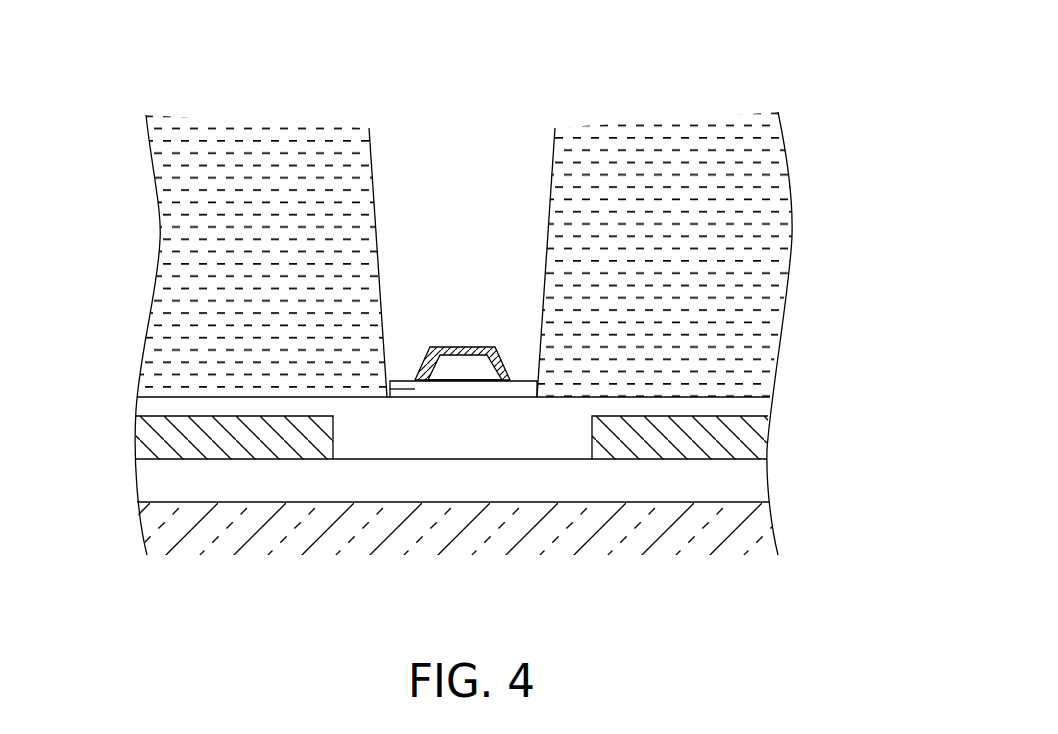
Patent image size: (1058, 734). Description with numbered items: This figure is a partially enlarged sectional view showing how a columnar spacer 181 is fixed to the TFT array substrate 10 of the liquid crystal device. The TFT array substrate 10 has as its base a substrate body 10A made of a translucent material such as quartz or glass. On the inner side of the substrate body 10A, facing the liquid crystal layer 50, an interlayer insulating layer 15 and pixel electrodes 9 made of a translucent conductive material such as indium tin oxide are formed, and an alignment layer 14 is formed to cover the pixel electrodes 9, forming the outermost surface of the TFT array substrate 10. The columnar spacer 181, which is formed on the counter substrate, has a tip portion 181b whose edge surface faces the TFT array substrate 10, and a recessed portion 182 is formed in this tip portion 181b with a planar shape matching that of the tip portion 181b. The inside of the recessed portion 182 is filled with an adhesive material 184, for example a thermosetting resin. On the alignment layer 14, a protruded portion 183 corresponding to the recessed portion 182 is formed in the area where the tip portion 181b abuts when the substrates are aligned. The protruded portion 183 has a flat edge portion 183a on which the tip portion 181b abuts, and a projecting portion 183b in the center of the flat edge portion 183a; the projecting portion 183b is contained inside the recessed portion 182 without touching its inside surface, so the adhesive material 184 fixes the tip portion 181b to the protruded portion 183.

The TFT array substrate 10 is at (810, 437).
The substrate body 10A is at (140, 523).
The pixel electrodes 9 is at (135, 436).
The alignment layer 14 is at (140, 405).
The interlayer insulating layer 15 is at (137, 481).
The liquid crystal layer 50 is at (160, 262).
The columnar spacer 181 is at (509, 138).
The tip portion 181b is at (407, 328).
The recessed portion 182 is at (500, 362).
The protruded portion 183 is at (520, 404).
The flat edge portion 183a is at (412, 390).
The projecting portion 183b is at (463, 368).
The adhesive material 184 is at (465, 346).